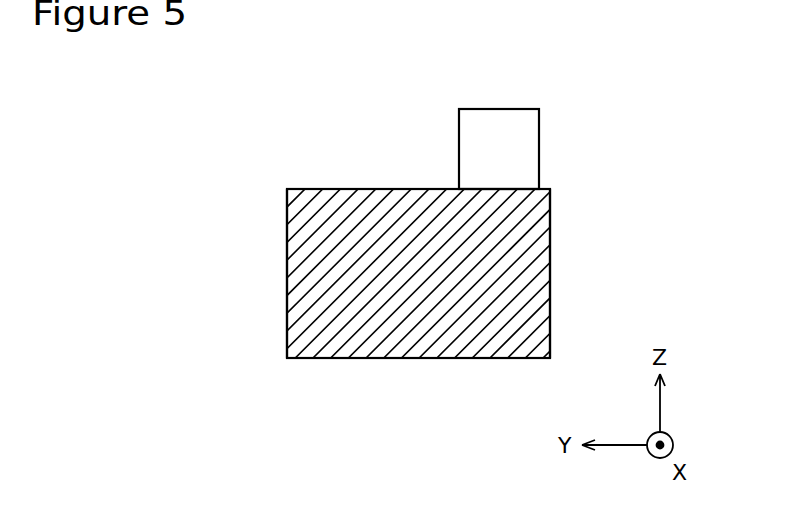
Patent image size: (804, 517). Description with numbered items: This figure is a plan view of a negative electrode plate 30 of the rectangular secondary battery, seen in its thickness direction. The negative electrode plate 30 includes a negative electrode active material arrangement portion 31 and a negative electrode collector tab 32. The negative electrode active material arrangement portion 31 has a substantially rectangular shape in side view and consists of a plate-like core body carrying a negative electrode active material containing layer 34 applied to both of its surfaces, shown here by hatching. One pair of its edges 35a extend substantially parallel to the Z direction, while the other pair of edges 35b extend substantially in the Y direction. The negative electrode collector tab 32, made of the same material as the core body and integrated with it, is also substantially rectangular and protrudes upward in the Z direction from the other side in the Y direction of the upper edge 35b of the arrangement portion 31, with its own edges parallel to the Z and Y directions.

The negative electrode plate 30 is at (402, 258).
The negative electrode active material arrangement portion 31 is at (302, 297).
The negative electrode collector tab 32 is at (500, 120).
The negative electrode active material containing layer 34 is at (360, 342).
The edges 35a is at (287, 247).
The edges 35b is at (352, 189).